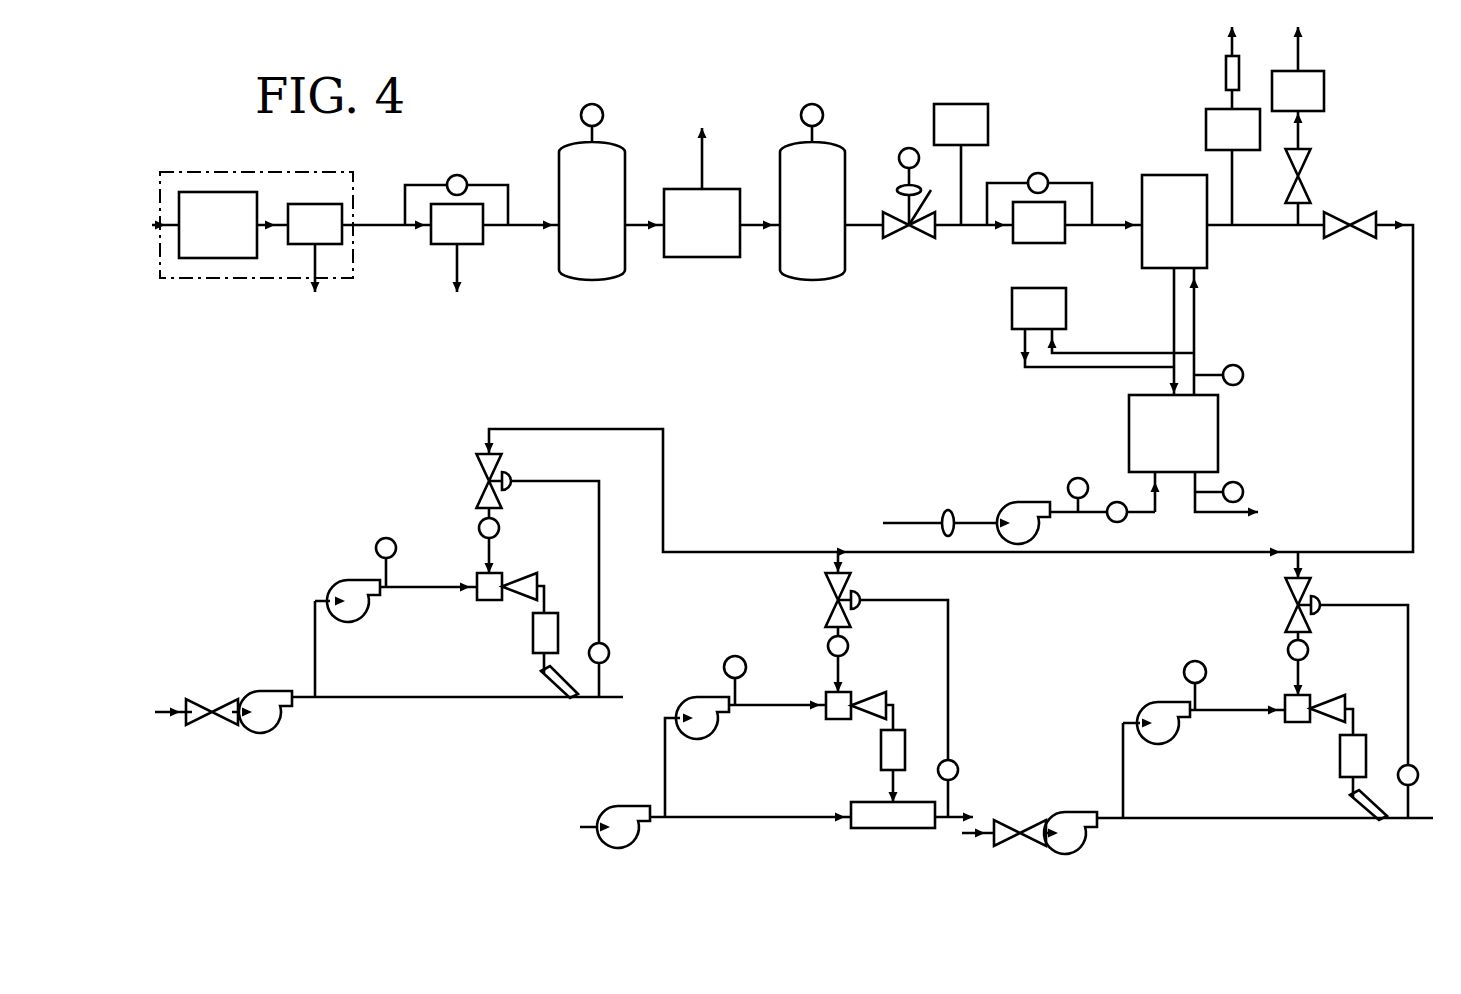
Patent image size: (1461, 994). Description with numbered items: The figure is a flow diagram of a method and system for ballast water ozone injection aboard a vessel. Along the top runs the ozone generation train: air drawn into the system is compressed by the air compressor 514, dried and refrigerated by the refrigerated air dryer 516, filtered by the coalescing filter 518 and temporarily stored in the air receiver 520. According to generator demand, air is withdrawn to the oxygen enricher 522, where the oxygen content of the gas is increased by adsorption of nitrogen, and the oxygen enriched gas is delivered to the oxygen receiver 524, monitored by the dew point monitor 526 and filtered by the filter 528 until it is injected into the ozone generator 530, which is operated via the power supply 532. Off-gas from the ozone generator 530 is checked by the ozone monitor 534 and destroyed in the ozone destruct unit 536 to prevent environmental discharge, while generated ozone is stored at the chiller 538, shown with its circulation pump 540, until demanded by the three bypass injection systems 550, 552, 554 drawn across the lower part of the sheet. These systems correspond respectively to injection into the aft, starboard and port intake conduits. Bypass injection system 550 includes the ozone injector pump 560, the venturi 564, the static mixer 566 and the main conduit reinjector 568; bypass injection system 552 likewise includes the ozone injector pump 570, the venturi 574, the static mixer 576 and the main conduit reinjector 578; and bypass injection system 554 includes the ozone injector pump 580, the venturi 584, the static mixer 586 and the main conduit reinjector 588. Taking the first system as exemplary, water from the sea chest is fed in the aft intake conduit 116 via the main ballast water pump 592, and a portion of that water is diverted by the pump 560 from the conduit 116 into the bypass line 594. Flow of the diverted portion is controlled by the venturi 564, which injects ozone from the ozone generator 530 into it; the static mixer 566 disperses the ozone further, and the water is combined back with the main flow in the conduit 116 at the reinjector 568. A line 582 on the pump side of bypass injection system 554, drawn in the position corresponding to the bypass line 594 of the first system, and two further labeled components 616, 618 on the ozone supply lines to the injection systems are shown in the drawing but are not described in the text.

The aft intake conduit 116 is at (172, 714).
The air compressor 514 is at (203, 237).
The refrigerated air dryer 516 is at (300, 236).
The coalescing filter 518 is at (442, 236).
The air receiver 520 is at (577, 221).
The oxygen enricher 522 is at (687, 234).
The oxygen receiver 524 is at (797, 221).
The dew point monitor 526 is at (946, 136).
The filter 528 is at (1024, 234).
The ozone generator 530 is at (1159, 234).
The power supply 532 is at (1024, 320).
The ozone monitor 534 is at (1218, 141).
The ozone destruct unit 536 is at (1283, 102).
The chiller 538 is at (1159, 444).
The circulation pump 540 is at (1022, 508).
The bypass injection system 550 is at (262, 611).
The bypass injection system 552 is at (638, 757).
The bypass injection system 554 is at (1069, 736).
The ozone injector pump 560 is at (336, 590).
The venturi 564 is at (497, 570).
The static mixer 566 is at (548, 632).
The main conduit reinjector 568 is at (546, 700).
The ozone injector pump 570 is at (695, 702).
The venturi 574 is at (848, 697).
The static mixer 576 is at (886, 757).
The main conduit reinjector 578 is at (853, 827).
The ozone injector pump 580 is at (1148, 714).
The suction line 582 is at (1124, 782).
The venturi 584 is at (1305, 694).
The static mixer 586 is at (1357, 750).
The main conduit reinjector 588 is at (1352, 805).
The main ballast water pump 592 is at (258, 735).
The bypass line 594 is at (316, 660).
The control valve 616 is at (497, 474).
The control valve 618 is at (843, 591).